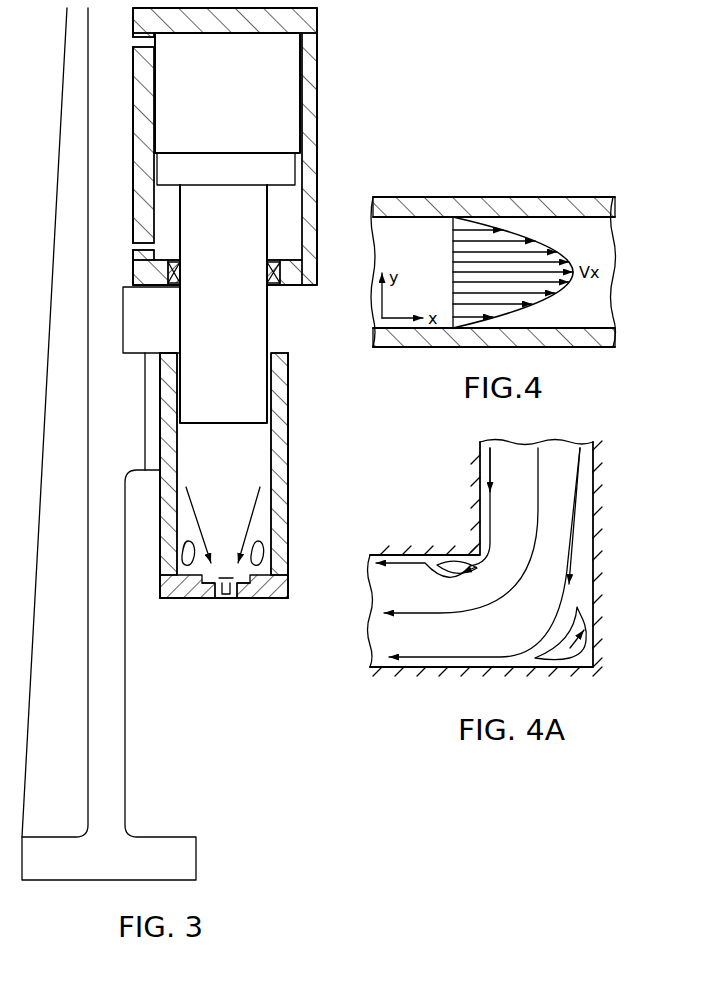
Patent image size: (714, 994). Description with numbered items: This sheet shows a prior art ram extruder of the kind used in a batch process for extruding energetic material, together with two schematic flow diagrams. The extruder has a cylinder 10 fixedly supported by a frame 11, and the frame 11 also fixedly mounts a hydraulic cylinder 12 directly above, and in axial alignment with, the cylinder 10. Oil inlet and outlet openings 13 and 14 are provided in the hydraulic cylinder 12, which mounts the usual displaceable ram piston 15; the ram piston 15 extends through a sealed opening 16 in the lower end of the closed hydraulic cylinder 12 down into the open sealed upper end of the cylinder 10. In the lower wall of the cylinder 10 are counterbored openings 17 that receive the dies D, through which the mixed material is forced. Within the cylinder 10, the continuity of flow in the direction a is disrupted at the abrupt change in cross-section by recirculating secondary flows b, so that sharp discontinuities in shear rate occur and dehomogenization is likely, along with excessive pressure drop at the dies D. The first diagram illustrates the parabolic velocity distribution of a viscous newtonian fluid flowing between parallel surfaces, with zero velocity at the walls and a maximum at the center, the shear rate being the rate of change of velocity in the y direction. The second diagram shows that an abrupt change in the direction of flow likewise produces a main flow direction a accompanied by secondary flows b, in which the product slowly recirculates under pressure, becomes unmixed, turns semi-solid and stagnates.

In FIG. 3, the cylinder 10 is at (278, 451).
In FIG. 3, the frame 11 is at (131, 764).
In FIG. 3, the hydraulic cylinder 12 is at (301, 89).
In FIG. 3, the oil inlet opening 13 is at (150, 41).
In FIG. 3, the oil outlet opening 14 is at (150, 247).
In FIG. 3, the ram piston 15 is at (230, 263).
In FIG. 3, the sealed opening 16 is at (267, 288).
In FIG. 3, the counterbored openings 17 is at (262, 598).
In FIG. 3, the dies D is at (205, 601).
In FIG. 3, the direction of flow a is at (194, 519).
In FIG. 4A, the direction of flow a is at (480, 460).
In FIG. 3, the recirculating secondary flows b is at (264, 547).
In FIG. 4A, the recirculating secondary flows b is at (458, 558).